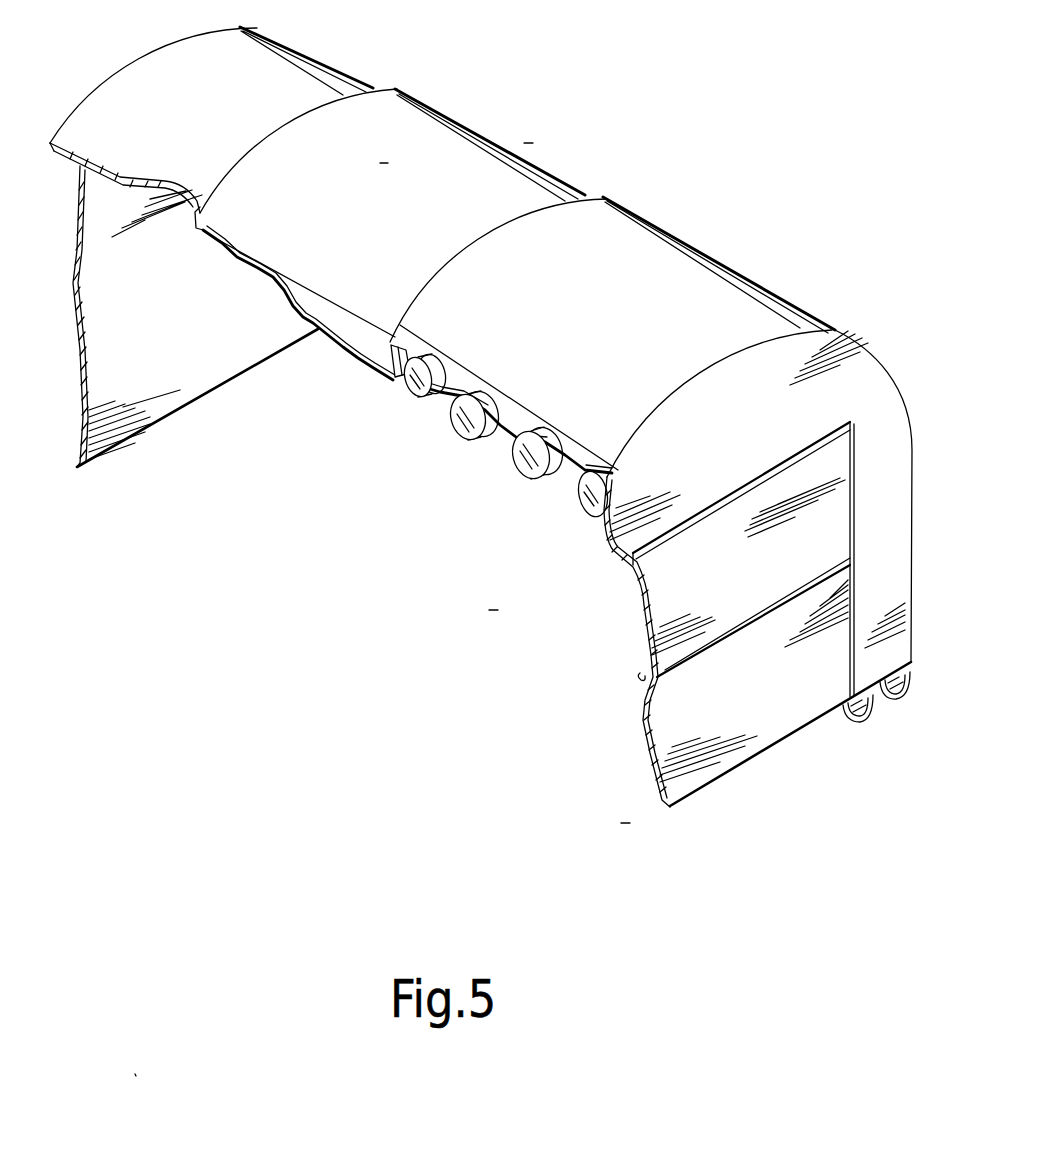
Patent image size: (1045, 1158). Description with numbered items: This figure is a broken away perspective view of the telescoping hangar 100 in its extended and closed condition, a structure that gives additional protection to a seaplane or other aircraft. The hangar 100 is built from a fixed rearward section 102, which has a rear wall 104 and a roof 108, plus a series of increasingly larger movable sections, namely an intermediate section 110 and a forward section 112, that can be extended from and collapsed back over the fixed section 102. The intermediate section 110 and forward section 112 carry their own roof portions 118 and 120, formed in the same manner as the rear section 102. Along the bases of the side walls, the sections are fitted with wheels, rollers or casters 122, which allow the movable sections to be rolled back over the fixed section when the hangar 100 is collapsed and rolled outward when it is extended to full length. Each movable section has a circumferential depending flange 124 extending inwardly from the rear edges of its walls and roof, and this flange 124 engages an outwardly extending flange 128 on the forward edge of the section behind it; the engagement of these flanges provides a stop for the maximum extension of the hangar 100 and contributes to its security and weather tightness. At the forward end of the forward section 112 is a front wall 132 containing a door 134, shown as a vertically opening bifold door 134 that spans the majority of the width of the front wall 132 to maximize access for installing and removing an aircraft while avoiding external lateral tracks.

The telescoping hangar 100 is at (481, 545).
The rearward section 102 is at (335, 58).
The rear wall 104 is at (194, 340).
The roof 108 is at (228, 109).
The intermediate section 110 is at (520, 153).
The forward section 112 is at (717, 253).
The roof portion 118 is at (408, 213).
The roof portion 120 is at (640, 332).
The wheels 122 is at (523, 515).
The depending flange 124 is at (363, 340).
The extending flange 128 is at (423, 393).
The front wall 132 is at (777, 432).
The door 134 is at (645, 632).